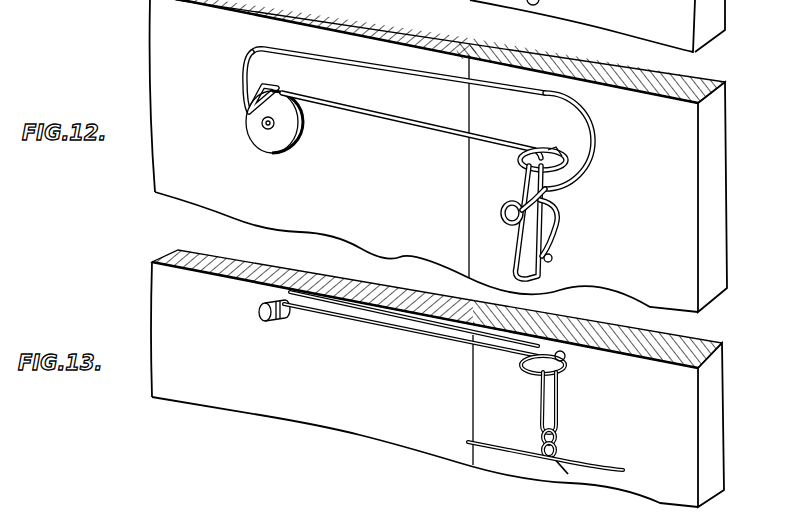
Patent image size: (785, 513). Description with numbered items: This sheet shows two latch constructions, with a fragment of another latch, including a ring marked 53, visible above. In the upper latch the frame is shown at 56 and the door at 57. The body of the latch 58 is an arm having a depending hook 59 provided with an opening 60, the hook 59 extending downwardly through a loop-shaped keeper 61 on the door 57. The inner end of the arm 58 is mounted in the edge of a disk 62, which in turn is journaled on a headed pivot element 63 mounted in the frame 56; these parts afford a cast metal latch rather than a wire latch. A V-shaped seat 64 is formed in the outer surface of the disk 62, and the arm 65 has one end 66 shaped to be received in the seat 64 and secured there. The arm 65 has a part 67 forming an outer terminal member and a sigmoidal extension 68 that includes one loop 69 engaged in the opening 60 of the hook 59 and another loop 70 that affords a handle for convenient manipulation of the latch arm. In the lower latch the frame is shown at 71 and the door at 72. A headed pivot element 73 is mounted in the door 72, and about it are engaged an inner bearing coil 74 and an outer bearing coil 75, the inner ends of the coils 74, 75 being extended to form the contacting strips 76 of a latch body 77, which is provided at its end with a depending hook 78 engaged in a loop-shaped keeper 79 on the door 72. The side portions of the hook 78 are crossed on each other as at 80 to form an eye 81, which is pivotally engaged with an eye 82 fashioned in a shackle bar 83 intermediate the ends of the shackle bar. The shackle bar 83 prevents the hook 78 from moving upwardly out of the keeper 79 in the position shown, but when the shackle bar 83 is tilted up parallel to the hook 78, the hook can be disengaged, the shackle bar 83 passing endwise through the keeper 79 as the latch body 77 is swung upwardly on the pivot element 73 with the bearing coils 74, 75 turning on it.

In FIG. 12, the ring 53 is at (540, 2).
In FIG. 12, the frame 56 is at (163, 50).
In FIG. 12, the door 57 is at (718, 222).
In FIG. 12, the body of the latch 58 is at (418, 128).
In FIG. 12, the depending hook 59 is at (525, 196).
In FIG. 12, the opening 60 is at (552, 192).
In FIG. 12, the loop-shaped keeper 61 is at (566, 157).
In FIG. 12, the disk 62 is at (272, 151).
In FIG. 12, the headed pivot element 63 is at (263, 128).
In FIG. 12, the V-shaped seat 64 is at (248, 115).
In FIG. 12, the arm 65 is at (419, 76).
In FIG. 12, the end of the arm 66 is at (254, 90).
In FIG. 12, the part of the arm 67 is at (590, 124).
In FIG. 12, the sigmoidal extension 68 is at (558, 214).
In FIG. 12, the loop 69 is at (506, 221).
In FIG. 12, the loop 70 is at (550, 261).
In FIG. 13, the frame 71 is at (155, 306).
In FIG. 13, the door 72 is at (725, 440).
In FIG. 13, the headed pivot element 73 is at (265, 322).
In FIG. 13, the inner bearing coil 74 is at (284, 308).
In FIG. 13, the outer bearing coil 75 is at (289, 315).
In FIG. 13, the contacting strips 76 is at (422, 330).
In FIG. 13, the latch body 77 is at (392, 300).
In FIG. 13, the depending hook 78 is at (557, 400).
In FIG. 13, the loop-shaped keeper 79 is at (565, 367).
In FIG. 13, the crossing 80 is at (560, 428).
In FIG. 13, the eye 81 is at (556, 448).
In FIG. 13, the eye 82 is at (571, 471).
In FIG. 13, the shackle bar 83 is at (612, 458).